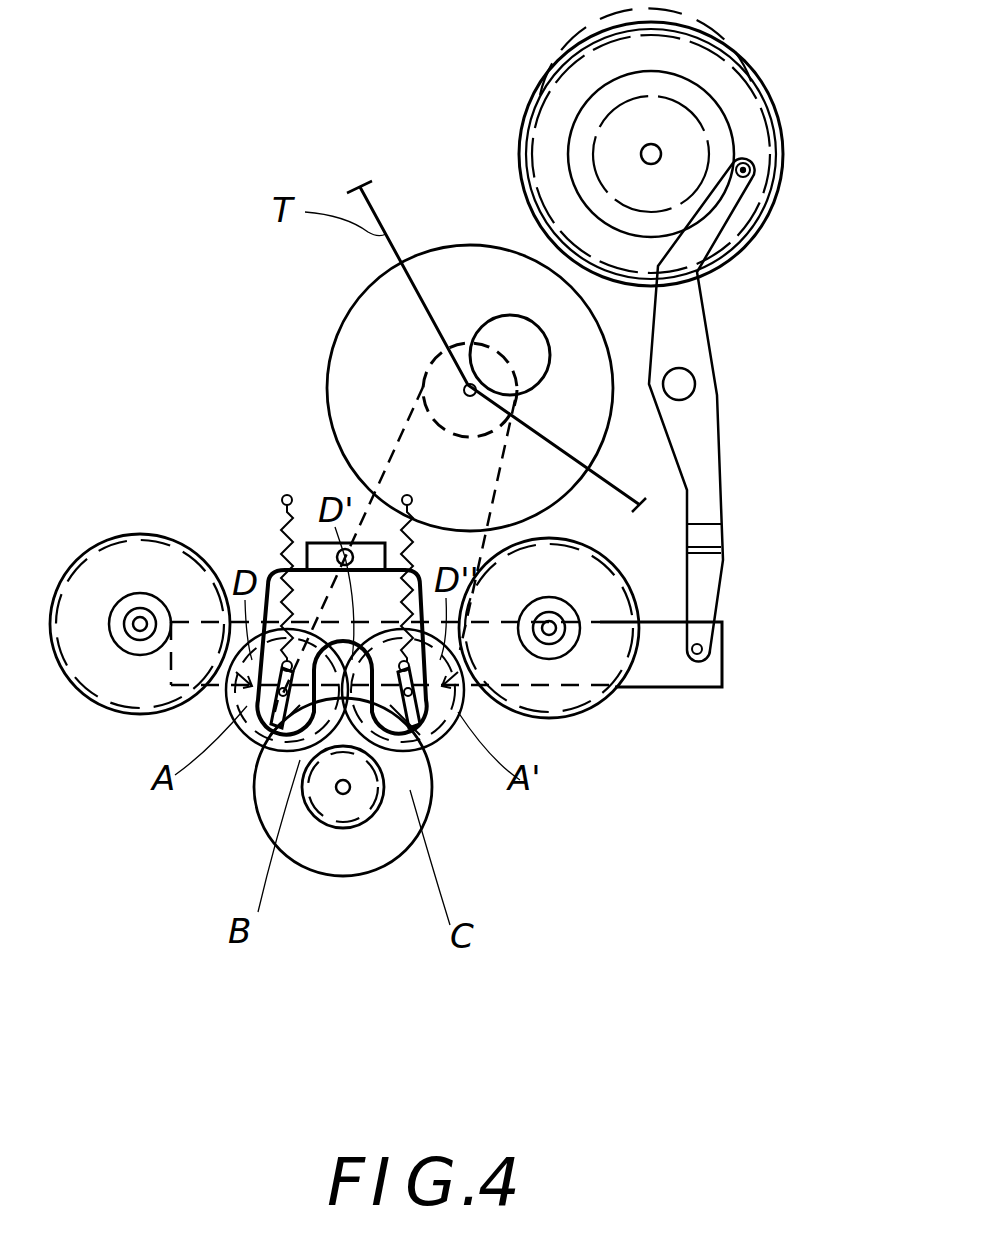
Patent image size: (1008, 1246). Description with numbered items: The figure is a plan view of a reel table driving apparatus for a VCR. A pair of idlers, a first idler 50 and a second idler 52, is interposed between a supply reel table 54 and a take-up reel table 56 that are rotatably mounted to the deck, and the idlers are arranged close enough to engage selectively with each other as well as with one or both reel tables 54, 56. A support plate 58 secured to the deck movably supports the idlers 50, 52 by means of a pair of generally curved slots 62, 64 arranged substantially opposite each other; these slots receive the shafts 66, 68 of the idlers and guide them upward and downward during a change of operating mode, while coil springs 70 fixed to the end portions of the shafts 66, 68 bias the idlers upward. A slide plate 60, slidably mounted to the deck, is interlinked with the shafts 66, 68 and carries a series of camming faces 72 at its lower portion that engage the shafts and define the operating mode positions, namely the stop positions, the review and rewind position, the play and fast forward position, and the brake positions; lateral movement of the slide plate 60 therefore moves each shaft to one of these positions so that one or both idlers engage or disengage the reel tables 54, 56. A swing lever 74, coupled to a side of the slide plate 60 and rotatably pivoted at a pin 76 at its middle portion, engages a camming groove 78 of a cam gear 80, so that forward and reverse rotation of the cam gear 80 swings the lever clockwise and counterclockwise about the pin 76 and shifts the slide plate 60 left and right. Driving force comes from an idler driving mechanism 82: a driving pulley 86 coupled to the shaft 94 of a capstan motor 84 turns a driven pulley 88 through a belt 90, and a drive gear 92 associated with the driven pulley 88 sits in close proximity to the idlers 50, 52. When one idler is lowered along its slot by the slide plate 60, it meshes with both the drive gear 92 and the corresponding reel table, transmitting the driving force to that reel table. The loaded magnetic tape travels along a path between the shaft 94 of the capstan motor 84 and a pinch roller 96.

The first idler 50 is at (230, 700).
The second idler 52 is at (465, 700).
The supply reel table 54 is at (110, 540).
The take-up reel table 56 is at (600, 700).
The support plate 58 is at (262, 562).
The slide plate 60 is at (690, 690).
The curved slot 62 is at (290, 716).
The curved slot 64 is at (410, 702).
The shaft 66 is at (300, 740).
The shaft 68 is at (420, 735).
The coil spring 70 is at (277, 580).
The camming face 72 is at (270, 712).
The swing lever 74 is at (720, 518).
The pin 76 is at (694, 392).
The camming groove 78 is at (735, 92).
The cam gear 80 is at (762, 234).
The idler driving mechanism 82 is at (350, 880).
The capstan motor 84 is at (450, 243).
The driving pulley 86 is at (432, 365).
The driven pulley 88 is at (330, 870).
The belt 90 is at (392, 460).
The drive gear 92 is at (365, 825).
The shaft 94 is at (462, 392).
The pinch roller 96 is at (503, 318).